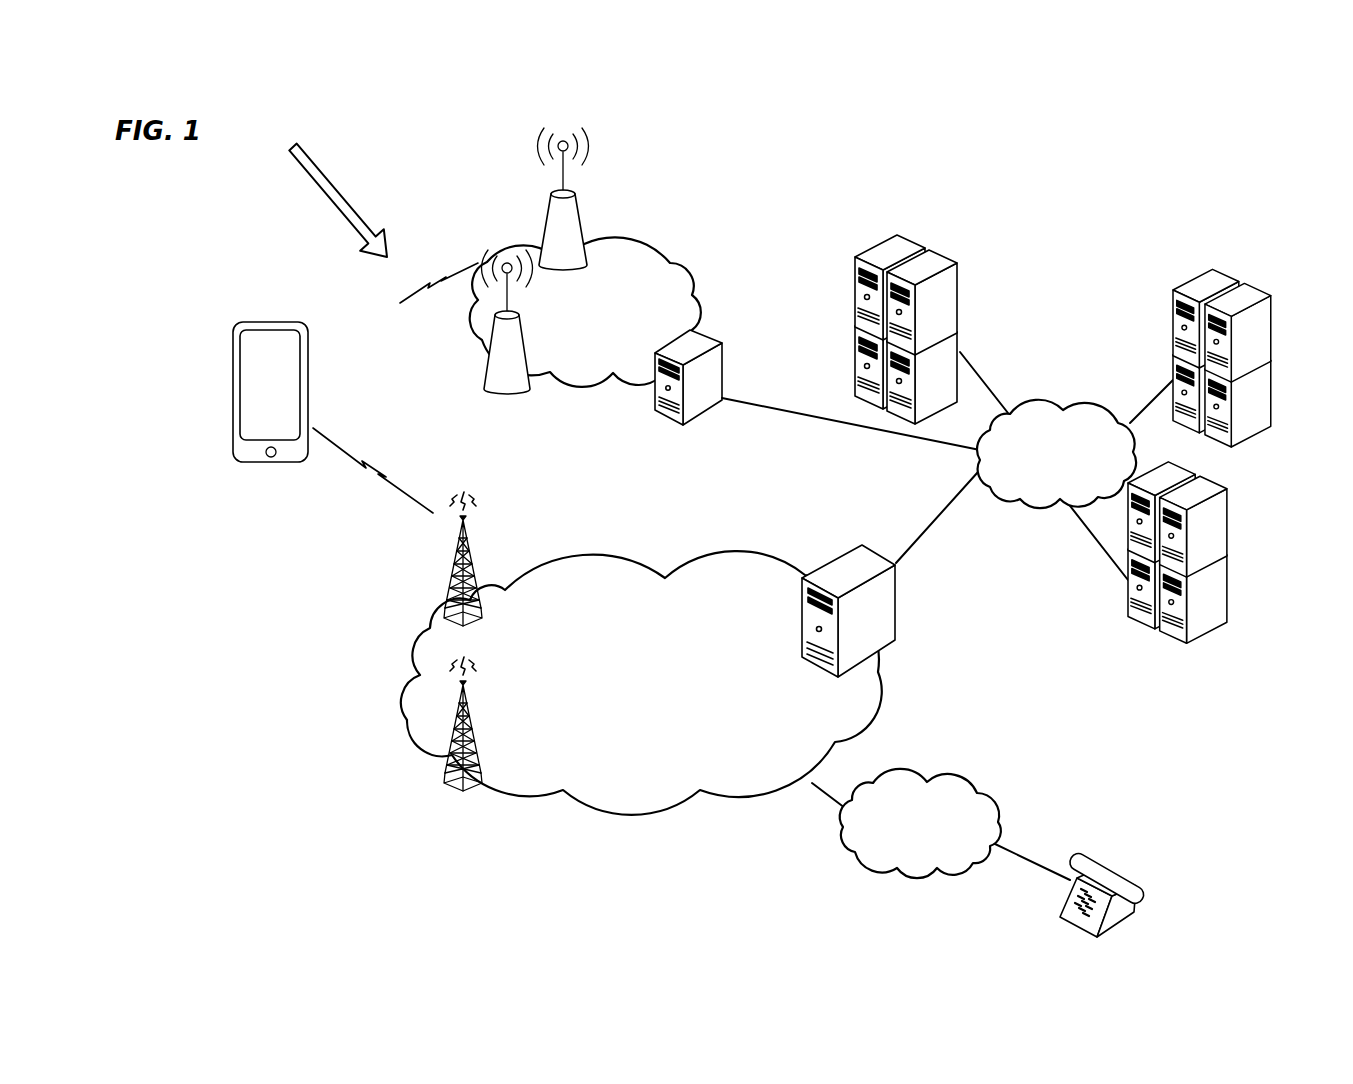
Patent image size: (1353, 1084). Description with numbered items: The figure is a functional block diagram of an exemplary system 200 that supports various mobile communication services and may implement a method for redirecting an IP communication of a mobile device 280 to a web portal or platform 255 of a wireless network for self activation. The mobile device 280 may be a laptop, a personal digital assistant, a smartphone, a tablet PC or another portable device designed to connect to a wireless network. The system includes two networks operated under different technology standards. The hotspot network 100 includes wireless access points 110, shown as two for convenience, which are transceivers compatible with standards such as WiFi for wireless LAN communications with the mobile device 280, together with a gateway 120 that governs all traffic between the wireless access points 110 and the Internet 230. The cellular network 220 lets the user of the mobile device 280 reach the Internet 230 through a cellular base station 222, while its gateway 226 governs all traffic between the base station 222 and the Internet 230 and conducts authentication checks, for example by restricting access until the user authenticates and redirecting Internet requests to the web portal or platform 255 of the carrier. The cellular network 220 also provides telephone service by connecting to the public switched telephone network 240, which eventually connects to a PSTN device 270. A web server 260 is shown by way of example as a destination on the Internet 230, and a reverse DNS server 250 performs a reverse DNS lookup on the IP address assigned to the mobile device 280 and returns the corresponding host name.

The system 200 is at (322, 188).
The hotspot network 100 is at (550, 372).
The wireless access point 110 is at (545, 232).
The gateway 120 is at (722, 378).
The cellular network 220 is at (578, 552).
The base station 222 is at (445, 587).
The gateway 226 is at (895, 637).
The Internet 230 is at (1020, 505).
The public switched telephone network 240 is at (1000, 806).
The reverse DNS server 250 is at (1173, 360).
The web portal or platform 255 is at (855, 330).
The web server 260 is at (1236, 494).
The PSTN device 270 is at (1060, 918).
The mobile device 280 is at (235, 370).